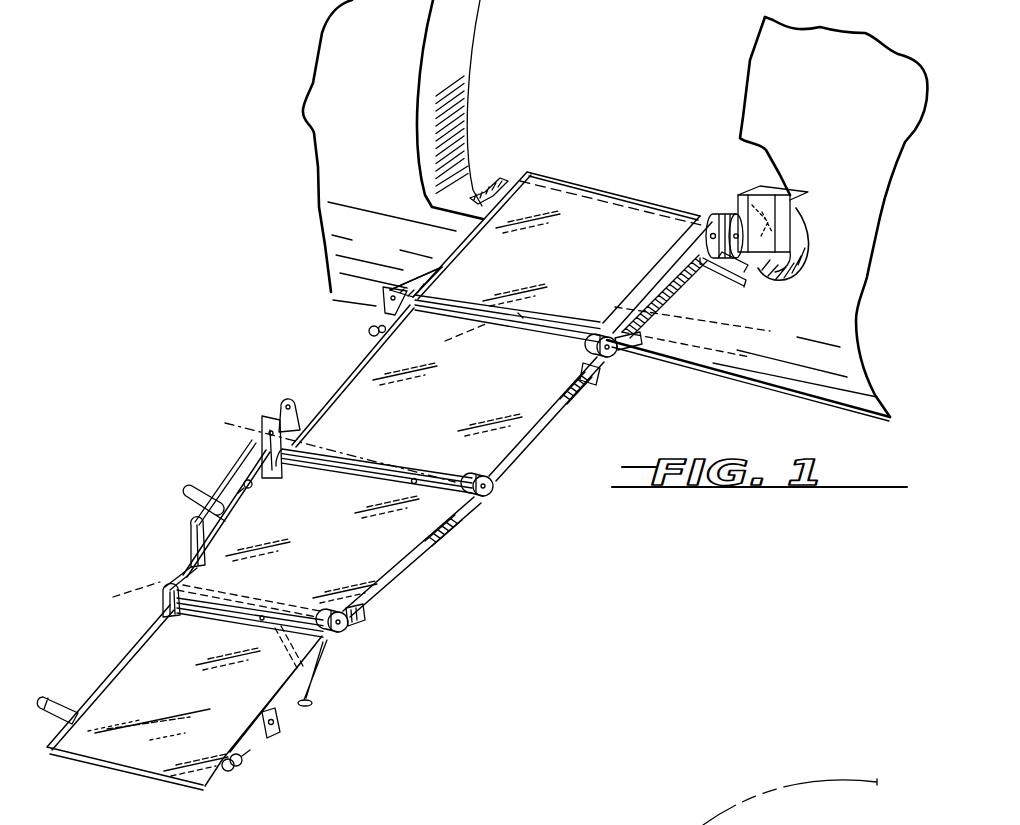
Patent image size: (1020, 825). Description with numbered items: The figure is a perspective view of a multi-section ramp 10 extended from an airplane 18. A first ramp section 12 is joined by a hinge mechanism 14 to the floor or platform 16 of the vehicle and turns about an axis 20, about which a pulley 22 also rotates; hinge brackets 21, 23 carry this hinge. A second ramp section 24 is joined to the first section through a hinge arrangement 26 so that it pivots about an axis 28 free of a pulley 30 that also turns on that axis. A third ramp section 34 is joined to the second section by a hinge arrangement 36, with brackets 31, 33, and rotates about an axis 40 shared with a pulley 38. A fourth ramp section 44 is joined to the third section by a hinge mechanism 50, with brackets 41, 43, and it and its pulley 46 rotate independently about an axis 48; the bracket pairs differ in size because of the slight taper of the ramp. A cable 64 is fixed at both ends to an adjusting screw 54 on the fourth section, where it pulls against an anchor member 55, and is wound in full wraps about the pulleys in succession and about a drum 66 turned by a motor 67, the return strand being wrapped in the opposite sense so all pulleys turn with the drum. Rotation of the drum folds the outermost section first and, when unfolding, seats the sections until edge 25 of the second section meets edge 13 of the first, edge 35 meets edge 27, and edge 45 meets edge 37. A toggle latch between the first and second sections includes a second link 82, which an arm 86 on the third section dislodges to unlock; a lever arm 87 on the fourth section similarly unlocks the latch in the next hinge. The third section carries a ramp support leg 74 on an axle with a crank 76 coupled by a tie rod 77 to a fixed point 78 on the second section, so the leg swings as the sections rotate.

The ramp 10 is at (262, 329).
The first ramp section 12 is at (588, 268).
The edge of first section 13 is at (548, 322).
The hinge mechanism 14 is at (702, 266).
The floor or platform 16 is at (738, 274).
The airplane 18 is at (322, 38).
The axis 20 is at (738, 216).
The hinge bracket 21 is at (420, 279).
The pulley 22 is at (713, 232).
The hinge bracket 23 is at (382, 296).
The second ramp section 24 is at (455, 405).
The edge of second section 25 is at (520, 314).
The hinge arrangement 26 is at (633, 343).
The edge of second section 27 is at (416, 479).
The axis 28 is at (448, 339).
The pulley 30 is at (607, 364).
The hinge bracket 31 is at (275, 410).
The hinge bracket 33 is at (258, 457).
The third ramp section 34 is at (331, 538).
The edge of third section 35 is at (333, 463).
The hinge arrangement 36 is at (468, 505).
The edge of third section 37 is at (262, 617).
The pulley 38 is at (494, 493).
The axis 40 is at (402, 432).
The hinge bracket 41 is at (190, 565).
The hinge bracket 43 is at (163, 606).
The fourth ramp section 44 is at (188, 702).
The edge of fourth section 45 is at (240, 614).
The pulley 46 is at (348, 636).
The axis 48 is at (119, 597).
The hinge mechanism 50 is at (366, 618).
The adjusting screw 54 is at (247, 757).
The anchor member 55 is at (276, 730).
The cable 64 is at (660, 308).
The drum 66 is at (790, 193).
The motor 67 is at (786, 236).
The ramp support leg 74 is at (310, 693).
The crank 76 is at (191, 548).
The tie rod 77 is at (236, 476).
The fixed point 78 is at (291, 403).
The second link 82 is at (367, 333).
The arm 86 is at (189, 492).
The lever arm 87 is at (78, 667).